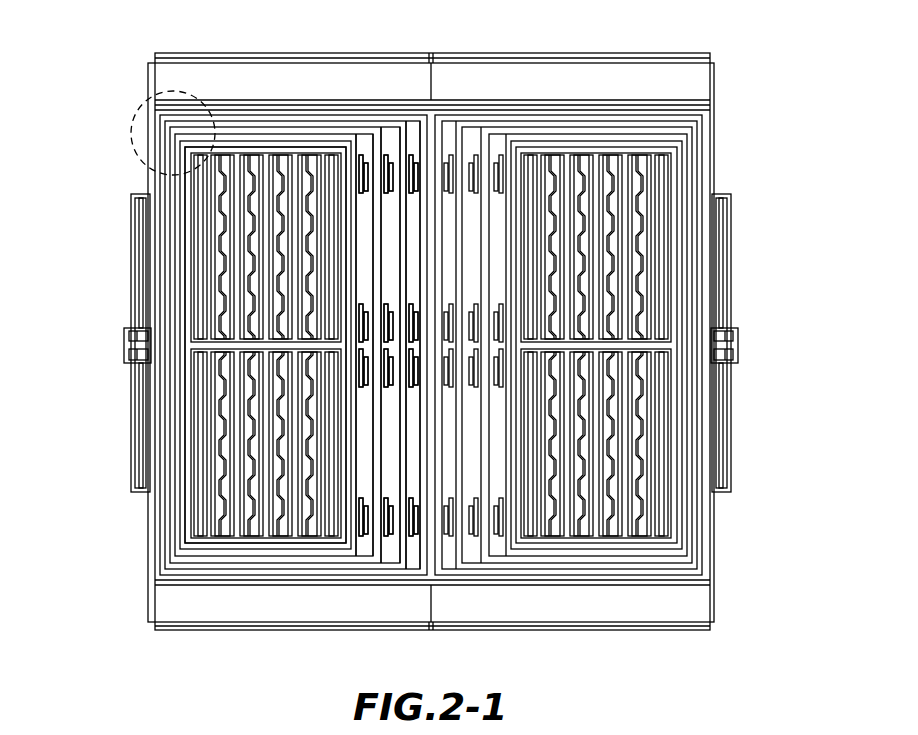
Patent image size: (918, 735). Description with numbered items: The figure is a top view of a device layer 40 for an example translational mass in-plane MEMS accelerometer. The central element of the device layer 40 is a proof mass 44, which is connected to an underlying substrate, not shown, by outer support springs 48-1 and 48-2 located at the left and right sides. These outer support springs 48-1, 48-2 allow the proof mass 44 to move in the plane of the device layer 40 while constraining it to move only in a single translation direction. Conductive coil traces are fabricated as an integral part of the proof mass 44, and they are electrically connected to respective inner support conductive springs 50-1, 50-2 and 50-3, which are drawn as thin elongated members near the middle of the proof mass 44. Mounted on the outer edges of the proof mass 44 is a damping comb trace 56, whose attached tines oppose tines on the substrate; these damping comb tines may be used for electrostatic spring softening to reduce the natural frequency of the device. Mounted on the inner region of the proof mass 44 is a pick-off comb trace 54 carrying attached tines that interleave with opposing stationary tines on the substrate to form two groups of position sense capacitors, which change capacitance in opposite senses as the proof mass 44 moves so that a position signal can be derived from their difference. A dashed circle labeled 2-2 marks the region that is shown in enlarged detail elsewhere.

The device layer 40 is at (429, 359).
The proof mass 44 is at (428, 550).
The outer support spring 48-1 is at (122, 420).
The outer support spring 48-2 is at (727, 420).
The inner support conductive spring 50-1 is at (405, 490).
The inner support conductive spring 50-2 is at (377, 526).
The inner support conductive spring 50-3 is at (350, 490).
The pick-off comb trace 54 is at (287, 133).
The damping comb trace 56 is at (140, 70).
The section line 2-2 is at (125, 128).